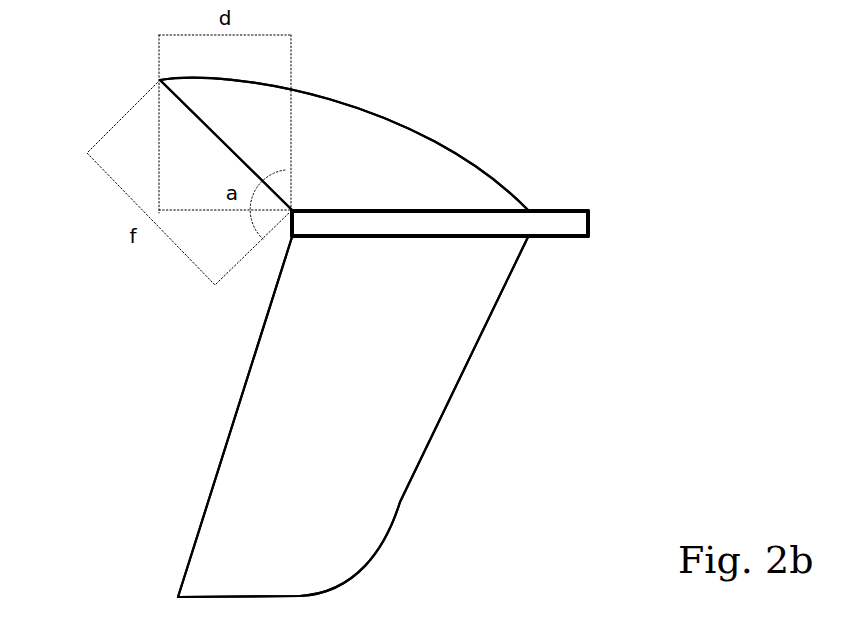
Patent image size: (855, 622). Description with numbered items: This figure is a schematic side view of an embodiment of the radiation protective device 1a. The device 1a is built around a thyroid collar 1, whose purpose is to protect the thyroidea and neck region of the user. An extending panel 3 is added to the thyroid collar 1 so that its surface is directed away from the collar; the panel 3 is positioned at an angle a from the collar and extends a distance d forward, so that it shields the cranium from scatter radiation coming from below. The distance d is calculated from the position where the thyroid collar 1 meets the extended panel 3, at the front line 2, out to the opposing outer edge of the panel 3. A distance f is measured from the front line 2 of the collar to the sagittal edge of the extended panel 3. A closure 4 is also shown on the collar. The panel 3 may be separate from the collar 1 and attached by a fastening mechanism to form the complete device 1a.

The thyroid collar 1 is at (132, 215).
The device 1a is at (463, 480).
The front line 2 is at (463, 218).
The extending panel 3 is at (347, 147).
The closure 4 is at (590, 223).